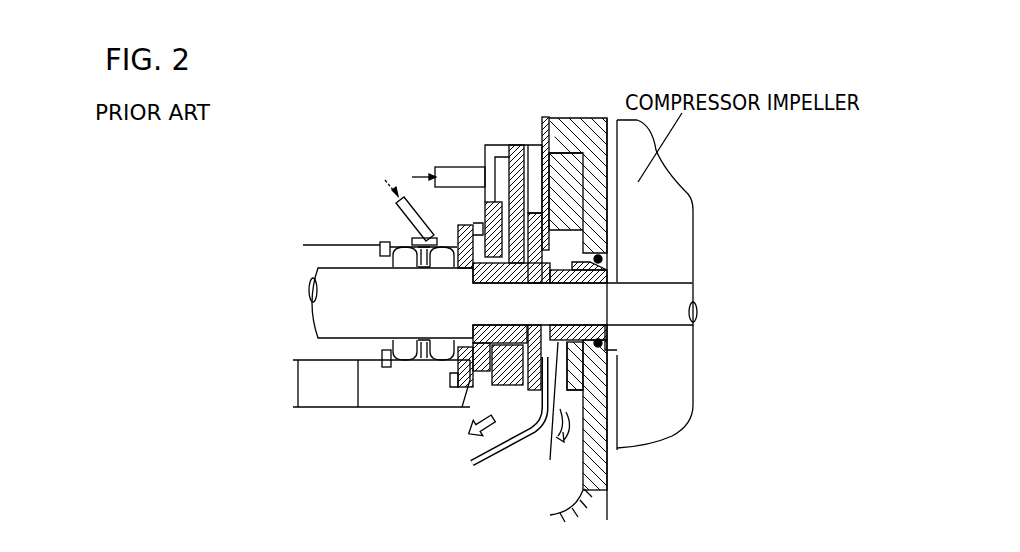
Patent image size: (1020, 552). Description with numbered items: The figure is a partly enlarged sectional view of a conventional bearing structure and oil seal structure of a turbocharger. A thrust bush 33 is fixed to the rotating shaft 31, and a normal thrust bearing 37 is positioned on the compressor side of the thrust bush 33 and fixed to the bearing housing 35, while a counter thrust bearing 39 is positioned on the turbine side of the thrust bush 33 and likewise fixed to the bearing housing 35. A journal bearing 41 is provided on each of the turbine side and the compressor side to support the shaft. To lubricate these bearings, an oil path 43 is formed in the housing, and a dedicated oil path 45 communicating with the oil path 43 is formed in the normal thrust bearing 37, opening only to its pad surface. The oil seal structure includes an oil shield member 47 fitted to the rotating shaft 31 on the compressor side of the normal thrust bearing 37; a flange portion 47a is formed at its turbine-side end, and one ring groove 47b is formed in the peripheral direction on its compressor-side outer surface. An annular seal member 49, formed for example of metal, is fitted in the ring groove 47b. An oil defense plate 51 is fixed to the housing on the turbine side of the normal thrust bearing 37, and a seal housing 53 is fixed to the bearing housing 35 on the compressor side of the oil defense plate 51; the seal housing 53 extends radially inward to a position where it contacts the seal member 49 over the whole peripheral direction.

The rotating shaft 31 is at (373, 298).
The thrust bush 33 is at (472, 224).
The bearing housing 35 is at (343, 179).
The normal thrust bearing 37 is at (520, 192).
The counter thrust bearing 39 is at (462, 385).
The journal bearing 41 is at (438, 348).
The oil path 43 is at (448, 177).
The dedicated oil path 45 is at (495, 172).
The oil shield member 47 is at (560, 338).
The flange portion 47a is at (532, 212).
The ring groove 47b is at (613, 333).
The seal member 49 is at (618, 253).
The oil defense plate 51 is at (523, 440).
The seal housing 53 is at (575, 185).